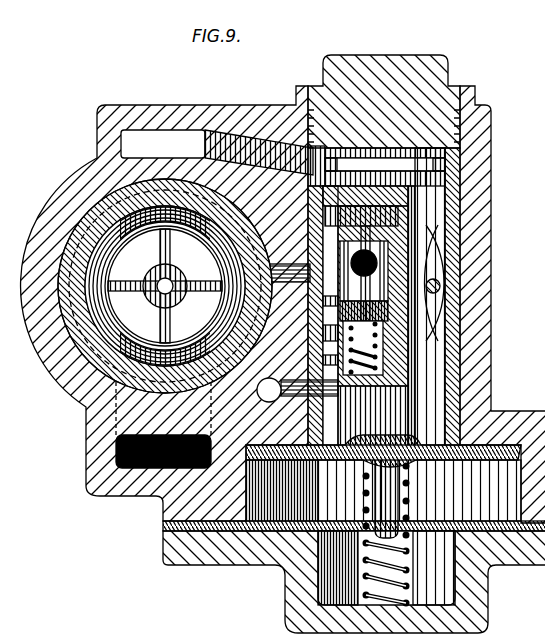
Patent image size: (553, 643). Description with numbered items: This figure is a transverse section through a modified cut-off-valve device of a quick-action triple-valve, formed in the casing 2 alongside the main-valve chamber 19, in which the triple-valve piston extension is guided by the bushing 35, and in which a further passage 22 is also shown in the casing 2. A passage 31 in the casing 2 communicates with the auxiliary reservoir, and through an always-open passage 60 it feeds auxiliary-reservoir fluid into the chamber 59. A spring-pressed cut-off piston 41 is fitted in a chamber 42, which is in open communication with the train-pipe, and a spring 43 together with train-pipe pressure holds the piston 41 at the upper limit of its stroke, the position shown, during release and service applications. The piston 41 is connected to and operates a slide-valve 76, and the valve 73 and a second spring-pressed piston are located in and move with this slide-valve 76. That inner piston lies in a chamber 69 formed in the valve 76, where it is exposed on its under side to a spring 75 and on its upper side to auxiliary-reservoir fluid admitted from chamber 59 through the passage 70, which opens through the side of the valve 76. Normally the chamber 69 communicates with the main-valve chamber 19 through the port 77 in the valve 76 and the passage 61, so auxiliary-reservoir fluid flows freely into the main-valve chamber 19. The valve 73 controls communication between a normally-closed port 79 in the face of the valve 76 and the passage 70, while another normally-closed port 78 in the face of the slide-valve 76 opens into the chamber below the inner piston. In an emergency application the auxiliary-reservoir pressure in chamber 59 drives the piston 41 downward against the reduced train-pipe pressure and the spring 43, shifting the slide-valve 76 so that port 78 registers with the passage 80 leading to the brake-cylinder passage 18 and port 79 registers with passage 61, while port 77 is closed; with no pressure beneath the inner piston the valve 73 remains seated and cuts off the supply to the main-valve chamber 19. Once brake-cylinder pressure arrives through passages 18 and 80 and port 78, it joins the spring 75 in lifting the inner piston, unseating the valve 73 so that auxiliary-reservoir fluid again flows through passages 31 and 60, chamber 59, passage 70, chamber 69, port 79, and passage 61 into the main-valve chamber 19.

The casing 2 is at (66, 180).
The brake-cylinder passage 18 is at (280, 382).
The main-valve chamber 19 is at (165, 286).
The passage 22 is at (163, 418).
The passage 31 is at (163, 144).
The bushing 35 is at (165, 286).
The cut-off piston 41 is at (453, 458).
The chamber 42 is at (383, 490).
The spring 43 is at (398, 545).
The chamber 59 is at (430, 296).
The passage 60 is at (259, 152).
The passage 61 is at (274, 273).
The chamber 69 is at (365, 273).
The passage 70 is at (376, 263).
The valve 73 is at (365, 196).
The spring 75 is at (366, 340).
The slide-valve 76 is at (315, 355).
The port 77 is at (315, 293).
The port 78 is at (315, 325).
The port 79 is at (305, 210).
The passage 80 is at (309, 391).